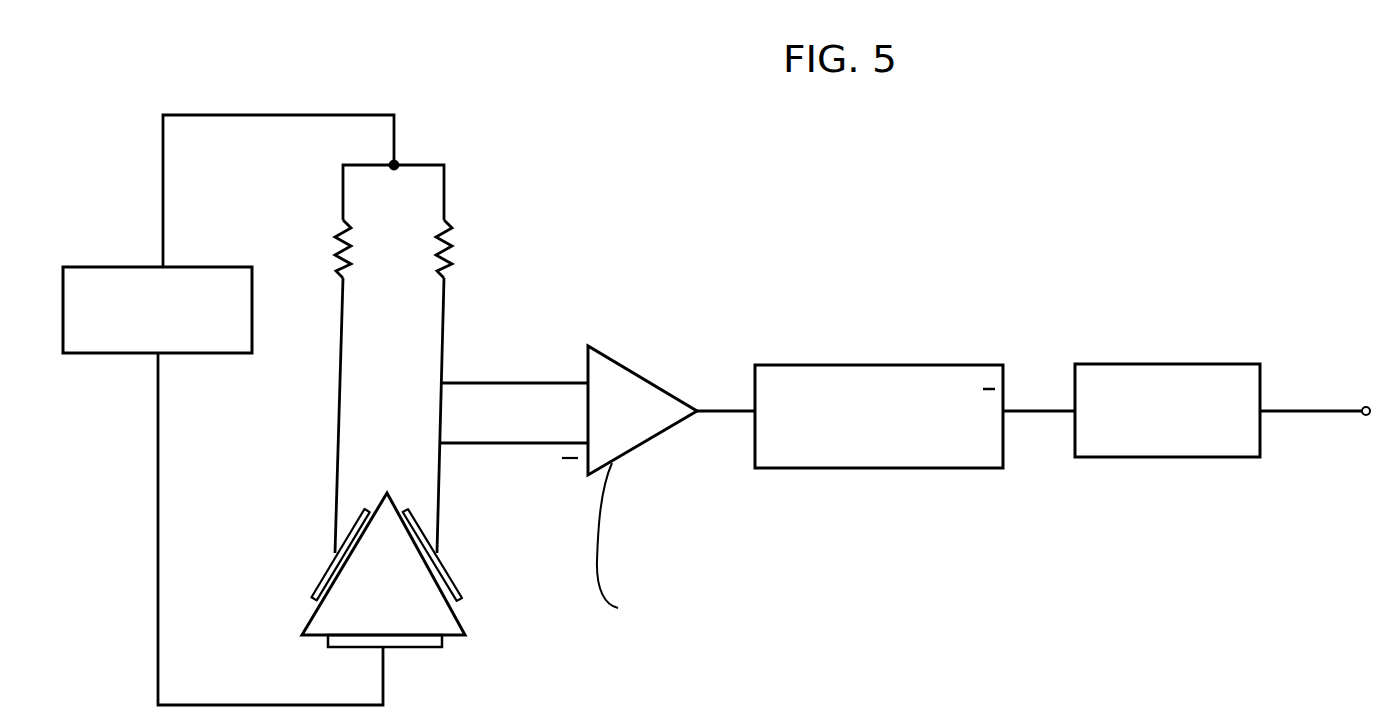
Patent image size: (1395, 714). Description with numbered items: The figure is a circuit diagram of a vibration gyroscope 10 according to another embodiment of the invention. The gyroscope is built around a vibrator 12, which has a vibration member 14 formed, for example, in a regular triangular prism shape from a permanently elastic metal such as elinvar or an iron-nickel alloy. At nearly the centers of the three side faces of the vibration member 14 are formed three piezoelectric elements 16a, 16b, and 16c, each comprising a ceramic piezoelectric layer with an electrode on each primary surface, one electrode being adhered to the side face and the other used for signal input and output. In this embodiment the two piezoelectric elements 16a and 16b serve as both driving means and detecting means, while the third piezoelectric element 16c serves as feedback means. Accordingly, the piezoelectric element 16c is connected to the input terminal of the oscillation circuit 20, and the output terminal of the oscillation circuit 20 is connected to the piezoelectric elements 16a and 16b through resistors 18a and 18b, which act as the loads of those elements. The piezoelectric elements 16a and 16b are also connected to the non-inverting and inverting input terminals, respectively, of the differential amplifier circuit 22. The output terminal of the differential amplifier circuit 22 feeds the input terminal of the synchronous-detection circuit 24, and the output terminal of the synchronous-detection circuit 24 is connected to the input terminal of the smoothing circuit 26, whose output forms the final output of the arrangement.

The vibration gyroscope 10 is at (760, 288).
The vibrator 12 is at (286, 618).
The vibration member 14 is at (410, 612).
The piezoelectric element 16a is at (327, 578).
The piezoelectric element 16b is at (448, 577).
The piezoelectric element 16c is at (447, 643).
The resistor 18a is at (338, 245).
The resistor 18b is at (448, 245).
The oscillation circuit 20 is at (118, 353).
The differential amplifier circuit 22 is at (652, 430).
The synchronous-detection circuit 24 is at (835, 468).
The smoothing circuit 26 is at (1152, 457).